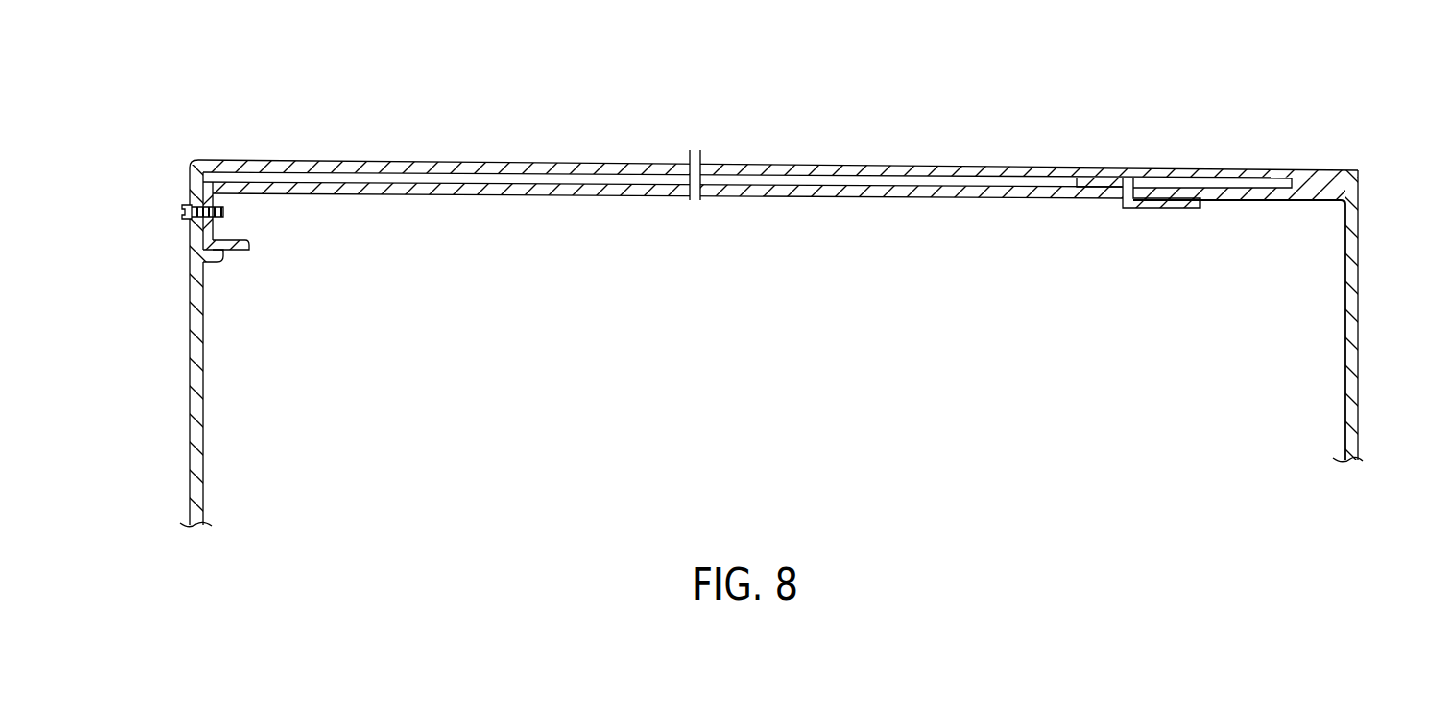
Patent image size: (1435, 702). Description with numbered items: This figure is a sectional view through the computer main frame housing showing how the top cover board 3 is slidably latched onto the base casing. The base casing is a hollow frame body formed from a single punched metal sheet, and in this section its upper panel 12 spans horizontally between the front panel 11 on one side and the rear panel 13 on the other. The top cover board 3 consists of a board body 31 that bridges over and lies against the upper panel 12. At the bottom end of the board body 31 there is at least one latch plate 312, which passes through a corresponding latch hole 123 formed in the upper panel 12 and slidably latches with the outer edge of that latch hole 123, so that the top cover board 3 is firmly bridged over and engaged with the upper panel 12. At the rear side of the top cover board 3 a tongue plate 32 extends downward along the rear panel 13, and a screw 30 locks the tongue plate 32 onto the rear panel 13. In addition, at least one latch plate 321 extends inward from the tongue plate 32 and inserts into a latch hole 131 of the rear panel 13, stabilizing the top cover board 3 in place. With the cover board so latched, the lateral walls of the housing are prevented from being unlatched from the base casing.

The top cover board 3 is at (656, 178).
The board body 31 is at (717, 163).
The tongue plate 32 is at (194, 190).
The latch plate 321 is at (243, 242).
The latch plate 312 is at (1135, 210).
The screw 30 is at (188, 216).
The upper panel 12 is at (851, 160).
The front panel 11 is at (1350, 316).
The rear panel 13 is at (197, 333).
The latch hole 131 is at (223, 255).
The latch hole 123 is at (1132, 180).